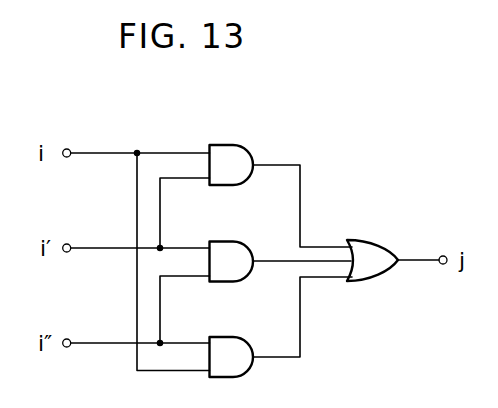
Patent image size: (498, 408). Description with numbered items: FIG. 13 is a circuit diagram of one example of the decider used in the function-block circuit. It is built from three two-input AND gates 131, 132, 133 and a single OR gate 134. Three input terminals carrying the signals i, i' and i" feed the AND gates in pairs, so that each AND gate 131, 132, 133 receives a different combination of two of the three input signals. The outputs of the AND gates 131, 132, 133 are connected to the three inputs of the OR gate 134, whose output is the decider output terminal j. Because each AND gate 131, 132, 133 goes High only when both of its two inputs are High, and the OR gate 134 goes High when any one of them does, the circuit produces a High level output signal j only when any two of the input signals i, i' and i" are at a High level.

The AND gate 131 is at (234, 145).
The AND gate 132 is at (234, 242).
The AND gate 133 is at (234, 337).
The OR gate 134 is at (367, 241).